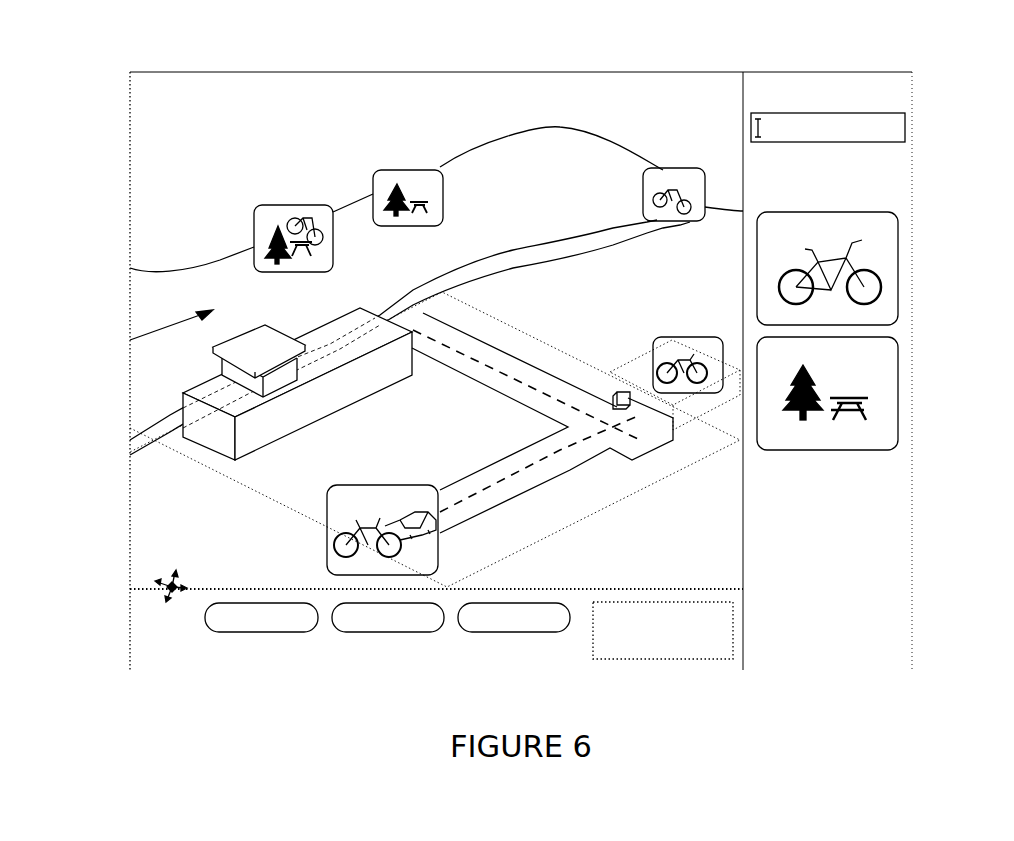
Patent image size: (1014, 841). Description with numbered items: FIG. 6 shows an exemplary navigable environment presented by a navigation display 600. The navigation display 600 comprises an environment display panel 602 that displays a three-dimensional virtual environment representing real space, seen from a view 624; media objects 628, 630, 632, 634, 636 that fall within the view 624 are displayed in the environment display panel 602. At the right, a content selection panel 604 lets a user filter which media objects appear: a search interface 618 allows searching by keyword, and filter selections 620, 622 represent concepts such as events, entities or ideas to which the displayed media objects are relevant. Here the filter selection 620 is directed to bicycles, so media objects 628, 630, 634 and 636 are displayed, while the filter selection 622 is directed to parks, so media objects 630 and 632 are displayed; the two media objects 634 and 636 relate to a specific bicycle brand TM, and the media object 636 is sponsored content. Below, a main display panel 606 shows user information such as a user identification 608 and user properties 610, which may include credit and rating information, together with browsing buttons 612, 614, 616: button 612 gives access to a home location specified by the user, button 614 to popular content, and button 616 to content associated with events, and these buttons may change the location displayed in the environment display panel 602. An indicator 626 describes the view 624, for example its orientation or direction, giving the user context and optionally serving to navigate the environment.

The navigation display 600 is at (521, 353).
The environment display panel 602 is at (151, 175).
The content selection panel 604 is at (813, 645).
The main display panel 606 is at (150, 617).
The user identification 608 is at (198, 672).
The user properties 610 is at (673, 652).
The button 612 is at (283, 632).
The button 614 is at (408, 632).
The button 616 is at (537, 632).
The search interface 618 is at (897, 113).
The filter selection 620 is at (885, 230).
The filter selection 622 is at (883, 353).
The view 624 is at (130, 340).
The indicator 626 is at (162, 564).
The media object 628 is at (333, 512).
The media object 630 is at (297, 203).
The media object 632 is at (417, 170).
The media object 634 is at (673, 170).
The media object 636 is at (693, 392).